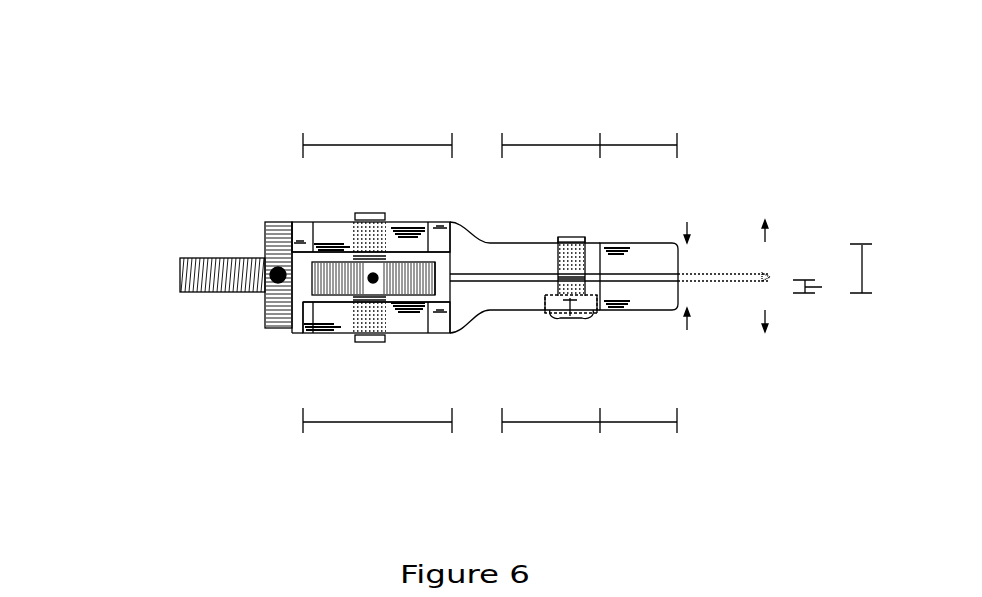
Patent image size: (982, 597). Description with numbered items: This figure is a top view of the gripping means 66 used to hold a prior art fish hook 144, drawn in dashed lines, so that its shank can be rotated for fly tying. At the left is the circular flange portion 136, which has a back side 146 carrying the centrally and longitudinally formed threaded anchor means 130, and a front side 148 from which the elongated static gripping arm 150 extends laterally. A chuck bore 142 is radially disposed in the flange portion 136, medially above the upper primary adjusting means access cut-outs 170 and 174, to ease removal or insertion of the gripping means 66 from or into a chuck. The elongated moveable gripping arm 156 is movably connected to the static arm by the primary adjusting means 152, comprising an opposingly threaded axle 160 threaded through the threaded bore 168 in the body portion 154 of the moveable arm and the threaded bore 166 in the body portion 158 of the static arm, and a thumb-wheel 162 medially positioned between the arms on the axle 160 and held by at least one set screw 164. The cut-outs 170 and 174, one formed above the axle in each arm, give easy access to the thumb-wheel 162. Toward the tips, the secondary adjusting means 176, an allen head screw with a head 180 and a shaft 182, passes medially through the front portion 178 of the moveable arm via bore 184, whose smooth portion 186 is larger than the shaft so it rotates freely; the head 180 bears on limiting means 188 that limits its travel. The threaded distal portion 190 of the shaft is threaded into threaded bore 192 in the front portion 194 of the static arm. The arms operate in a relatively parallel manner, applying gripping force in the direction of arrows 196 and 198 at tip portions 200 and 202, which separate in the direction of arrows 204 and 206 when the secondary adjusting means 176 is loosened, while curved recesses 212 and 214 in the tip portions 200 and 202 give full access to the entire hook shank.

The gripping means 66 is at (100, 165).
The threaded anchor means 130 is at (212, 292).
The circular flange portion 136 is at (280, 222).
The chuck bore 142 is at (276, 272).
The prior art fish hook 144 is at (728, 273).
The back side 146 is at (262, 240).
The front side 148 is at (298, 335).
The elongated static gripping arm 150 is at (455, 236).
The primary adjusting means 152 is at (422, 262).
The body portion 154 is at (417, 423).
The elongated moveable gripping arm 156 is at (455, 334).
The body portion 158 is at (335, 145).
The opposingly threaded axle 160 is at (376, 214).
The thumb-wheel 162 is at (405, 320).
The set screw 164 is at (345, 335).
The threaded bore 166 is at (397, 227).
The threaded bore 168 is at (407, 337).
The upper primary adjusting means access cut-out 170 is at (335, 334).
The upper primary adjusting means access cut-out 174 is at (341, 226).
The secondary adjusting means 176 is at (549, 321).
The front portion 178 is at (573, 423).
The head 180 is at (571, 320).
The shaft 182 is at (562, 236).
The bore 184 is at (547, 305).
The smooth portion 186 is at (818, 290).
The limiting means 188 is at (586, 320).
The distal portion 190 is at (862, 260).
The threaded bore 192 is at (583, 242).
The front portion 194 is at (530, 145).
The arrow 196 is at (690, 328).
The arrow 198 is at (688, 234).
The tip portion 200 is at (653, 423).
The tip portion 202 is at (625, 145).
The arrow 204 is at (765, 320).
The arrow 206 is at (765, 236).
The curved recess 212 is at (610, 311).
The curved recess 214 is at (612, 245).